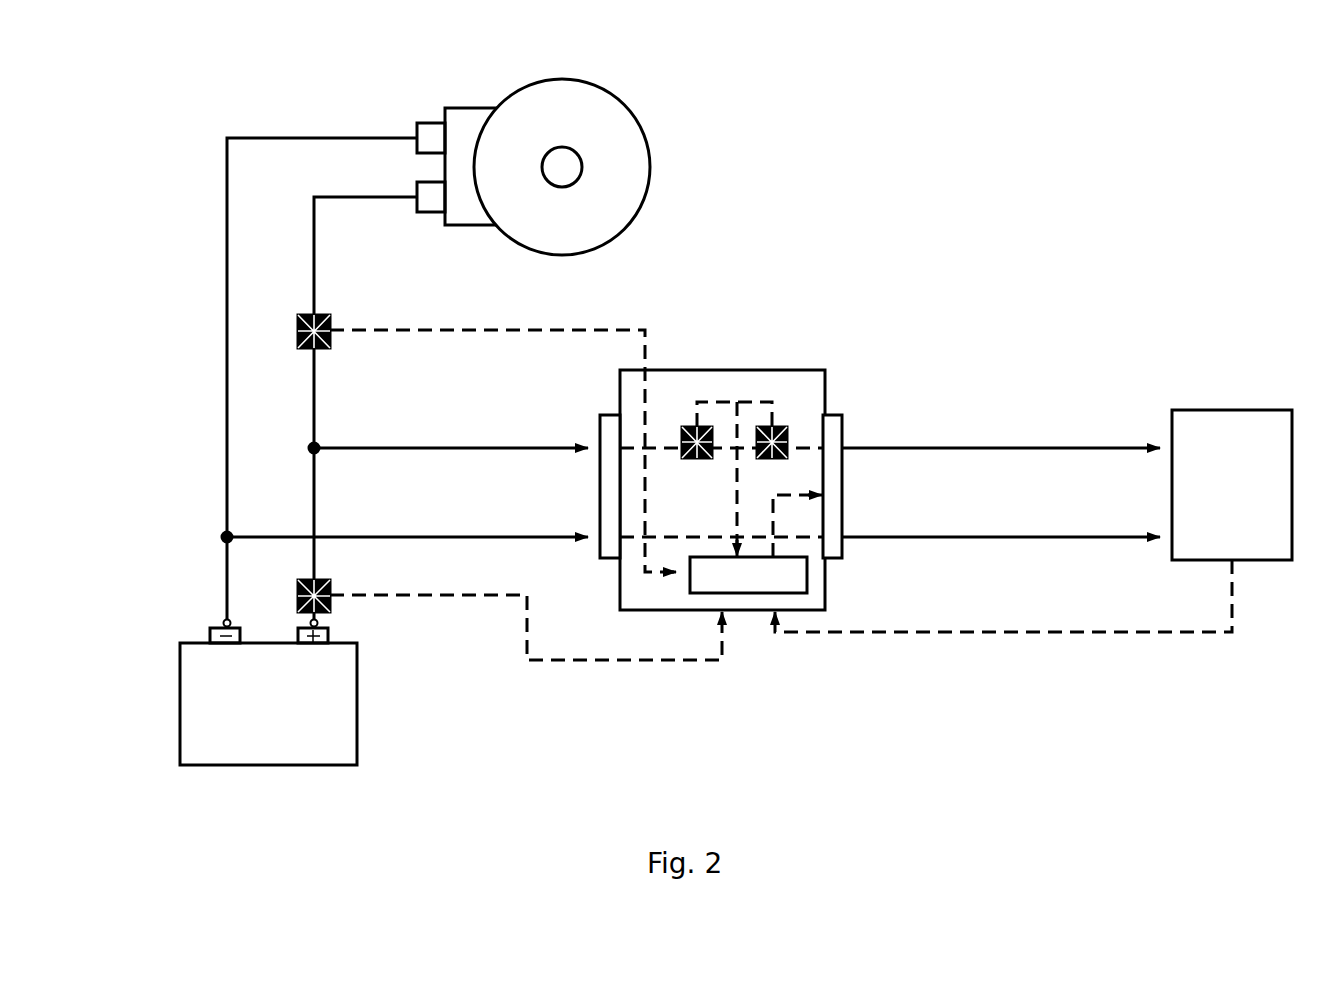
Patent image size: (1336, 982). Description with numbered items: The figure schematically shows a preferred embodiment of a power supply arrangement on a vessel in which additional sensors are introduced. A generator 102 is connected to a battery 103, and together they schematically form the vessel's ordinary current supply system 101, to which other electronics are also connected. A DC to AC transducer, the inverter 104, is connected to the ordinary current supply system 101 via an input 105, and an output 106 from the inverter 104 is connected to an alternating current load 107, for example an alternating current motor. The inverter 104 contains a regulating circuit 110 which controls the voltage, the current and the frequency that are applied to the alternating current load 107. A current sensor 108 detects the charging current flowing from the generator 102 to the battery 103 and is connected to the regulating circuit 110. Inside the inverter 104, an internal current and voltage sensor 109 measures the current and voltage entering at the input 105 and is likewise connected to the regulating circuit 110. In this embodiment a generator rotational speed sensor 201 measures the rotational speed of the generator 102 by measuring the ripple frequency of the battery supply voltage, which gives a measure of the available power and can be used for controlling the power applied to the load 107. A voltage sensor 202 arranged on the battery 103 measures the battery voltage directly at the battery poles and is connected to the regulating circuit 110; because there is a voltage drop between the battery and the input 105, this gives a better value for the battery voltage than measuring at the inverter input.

The ordinary current supply system 101 is at (140, 310).
The generator 102 is at (649, 157).
The battery 103 is at (357, 700).
The inverter 104 is at (735, 612).
The input 105 is at (600, 487).
The output 106 is at (842, 483).
The alternating current load 107 is at (1210, 410).
The current sensor 108 is at (330, 320).
The internal current and voltage sensor 109 is at (690, 427).
The regulating circuit 110 is at (785, 585).
The generator rotational speed sensor 201 is at (780, 427).
The voltage sensor 202 is at (332, 605).